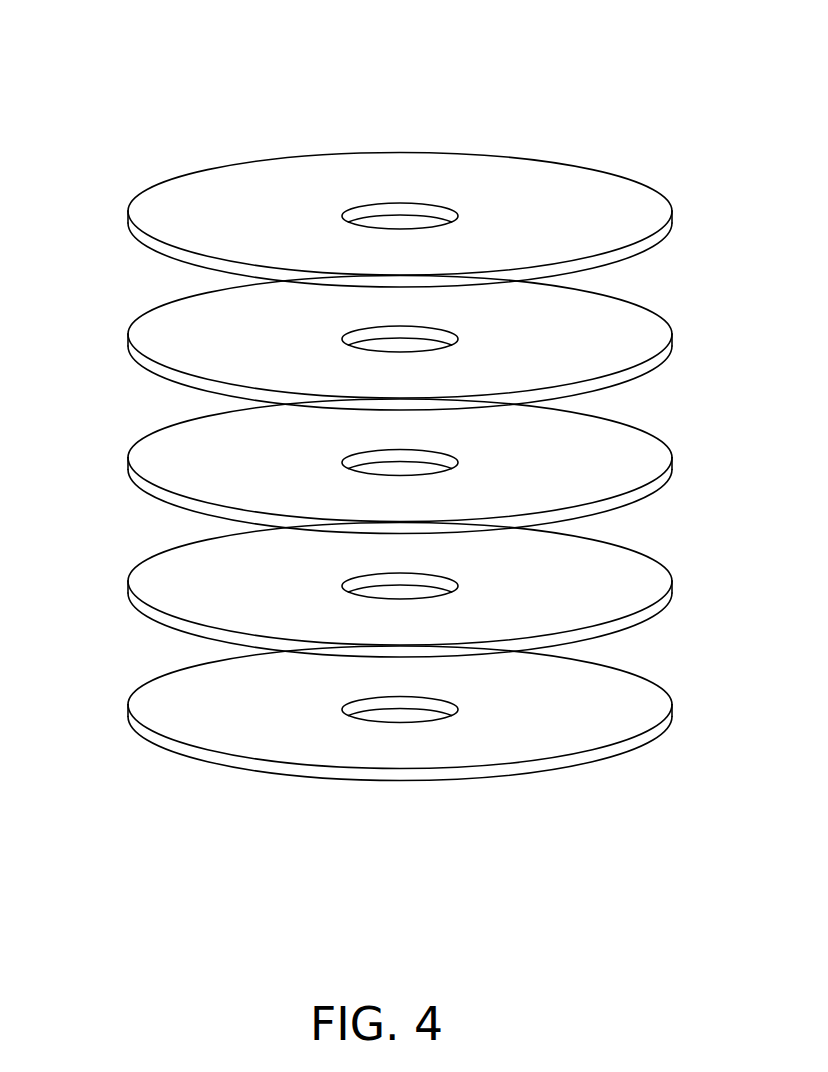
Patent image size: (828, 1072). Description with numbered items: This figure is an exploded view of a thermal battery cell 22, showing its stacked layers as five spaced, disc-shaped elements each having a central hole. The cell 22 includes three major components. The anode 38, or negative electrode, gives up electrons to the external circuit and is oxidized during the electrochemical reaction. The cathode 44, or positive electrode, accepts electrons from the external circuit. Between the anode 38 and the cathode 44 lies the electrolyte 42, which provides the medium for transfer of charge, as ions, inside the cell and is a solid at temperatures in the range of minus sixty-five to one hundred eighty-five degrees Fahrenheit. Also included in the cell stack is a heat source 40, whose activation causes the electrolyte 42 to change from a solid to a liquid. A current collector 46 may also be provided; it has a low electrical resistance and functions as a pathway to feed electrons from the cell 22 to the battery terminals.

The cell 22 is at (388, 118).
The anode 38 is at (143, 703).
The heat source 40 is at (143, 457).
The electrolyte 42 is at (143, 580).
The cathode 44 is at (143, 333).
The current collector 46 is at (143, 210).